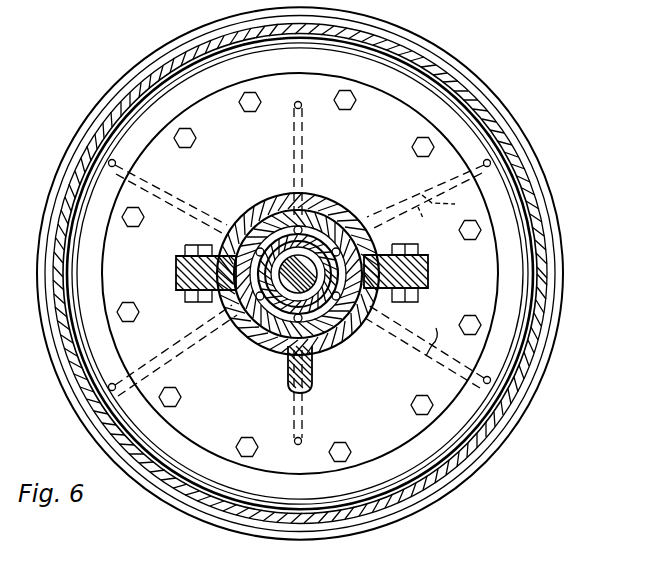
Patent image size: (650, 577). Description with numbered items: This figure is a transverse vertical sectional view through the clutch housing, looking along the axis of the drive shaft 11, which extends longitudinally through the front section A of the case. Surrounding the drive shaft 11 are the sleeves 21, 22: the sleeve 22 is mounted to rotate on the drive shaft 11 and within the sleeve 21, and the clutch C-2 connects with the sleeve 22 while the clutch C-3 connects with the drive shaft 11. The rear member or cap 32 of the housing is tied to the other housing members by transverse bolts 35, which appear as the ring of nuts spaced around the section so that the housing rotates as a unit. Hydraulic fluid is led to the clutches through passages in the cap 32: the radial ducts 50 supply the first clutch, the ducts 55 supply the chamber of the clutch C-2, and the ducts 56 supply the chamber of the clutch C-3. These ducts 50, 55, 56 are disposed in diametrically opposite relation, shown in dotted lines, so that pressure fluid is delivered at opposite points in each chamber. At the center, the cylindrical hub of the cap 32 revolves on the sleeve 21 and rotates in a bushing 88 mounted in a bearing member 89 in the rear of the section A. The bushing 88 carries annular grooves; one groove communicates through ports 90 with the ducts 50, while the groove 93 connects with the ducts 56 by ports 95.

The drive shaft 11 is at (270, 335).
The sleeve 21 is at (218, 302).
The sleeve 22 is at (258, 330).
The rear member or cap 32 is at (497, 290).
The transverse bolts 35 is at (136, 321).
The radial ducts 50 is at (306, 145).
The ducts 55 is at (338, 223).
The ducts 56 is at (182, 190).
The bushing 88 is at (313, 362).
The bearing member 89 is at (350, 226).
The ports 90 is at (320, 210).
The annular groove 93 is at (386, 248).
The ports 95 is at (260, 222).
The front section A is at (497, 130).
The clutch C-2 is at (433, 222).
The clutch C-3 is at (437, 333).